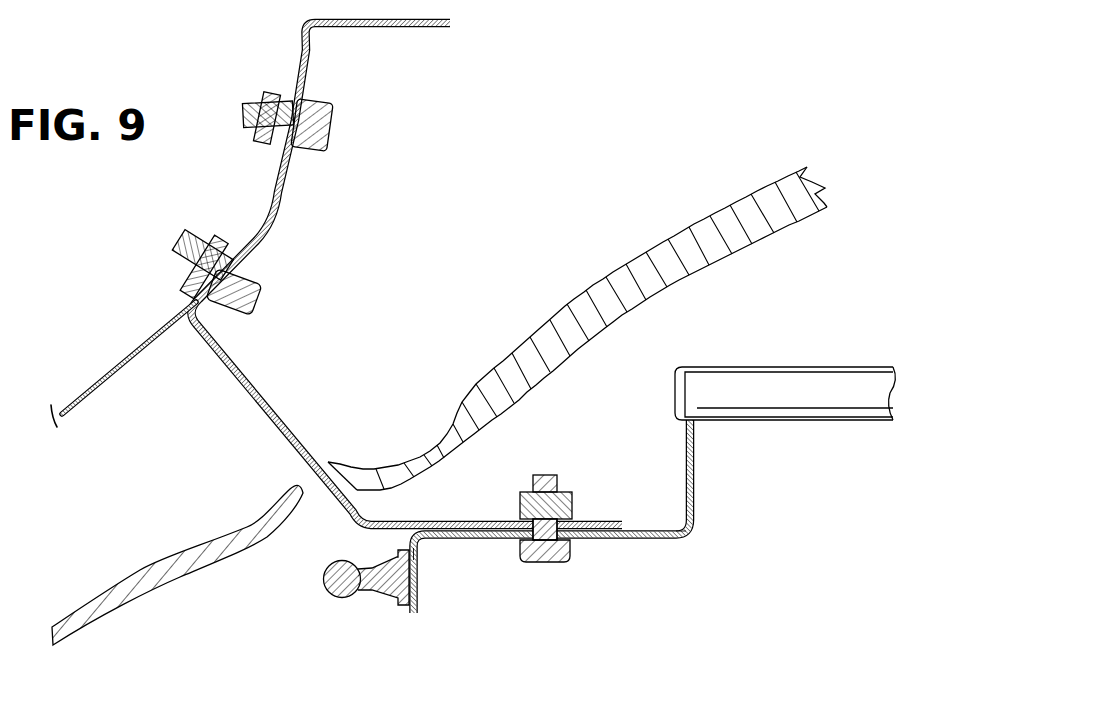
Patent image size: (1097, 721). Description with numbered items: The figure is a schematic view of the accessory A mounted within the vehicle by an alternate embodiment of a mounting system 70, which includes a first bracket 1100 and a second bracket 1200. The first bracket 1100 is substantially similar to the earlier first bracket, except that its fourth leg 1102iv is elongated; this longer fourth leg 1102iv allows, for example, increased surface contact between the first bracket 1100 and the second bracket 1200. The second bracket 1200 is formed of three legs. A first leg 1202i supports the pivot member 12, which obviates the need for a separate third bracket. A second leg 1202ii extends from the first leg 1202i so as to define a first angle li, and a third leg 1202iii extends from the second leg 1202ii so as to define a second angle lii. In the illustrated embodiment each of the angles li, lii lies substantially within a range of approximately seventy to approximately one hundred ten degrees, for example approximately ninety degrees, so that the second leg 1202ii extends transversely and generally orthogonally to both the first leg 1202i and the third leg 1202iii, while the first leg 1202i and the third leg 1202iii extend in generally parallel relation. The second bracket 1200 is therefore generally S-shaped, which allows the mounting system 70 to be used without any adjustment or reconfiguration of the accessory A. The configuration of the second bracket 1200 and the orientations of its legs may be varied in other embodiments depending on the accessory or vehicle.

The mounting system 70 is at (604, 93).
The first bracket 1100 is at (434, 160).
The second bracket 1200 is at (627, 534).
The first leg 1202i is at (425, 597).
The second leg 1202ii is at (623, 542).
The third leg 1202iii is at (701, 483).
The fourth leg 1102iv is at (458, 517).
The pivot member 12 is at (320, 592).
The accessory A is at (780, 363).
The first angle li is at (440, 542).
The second angle lii is at (664, 520).